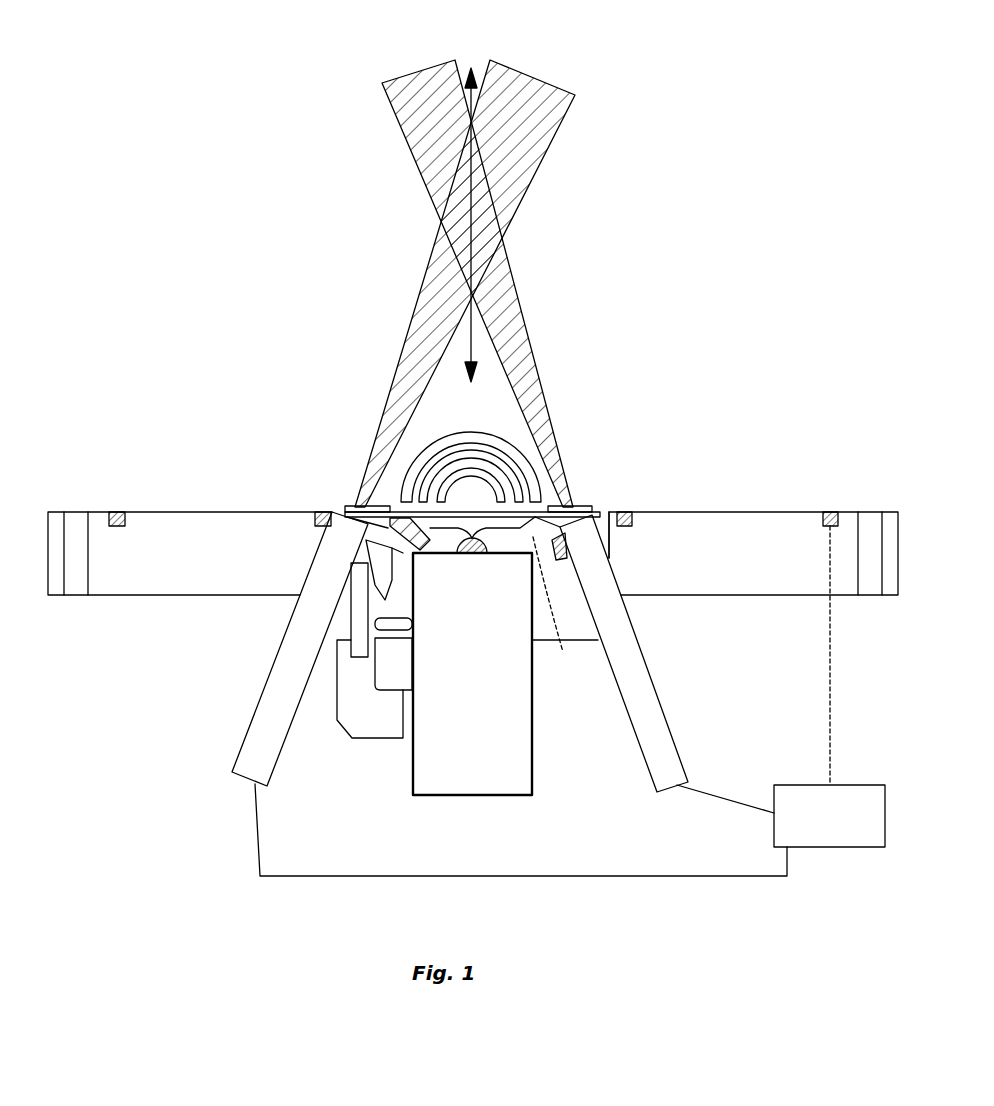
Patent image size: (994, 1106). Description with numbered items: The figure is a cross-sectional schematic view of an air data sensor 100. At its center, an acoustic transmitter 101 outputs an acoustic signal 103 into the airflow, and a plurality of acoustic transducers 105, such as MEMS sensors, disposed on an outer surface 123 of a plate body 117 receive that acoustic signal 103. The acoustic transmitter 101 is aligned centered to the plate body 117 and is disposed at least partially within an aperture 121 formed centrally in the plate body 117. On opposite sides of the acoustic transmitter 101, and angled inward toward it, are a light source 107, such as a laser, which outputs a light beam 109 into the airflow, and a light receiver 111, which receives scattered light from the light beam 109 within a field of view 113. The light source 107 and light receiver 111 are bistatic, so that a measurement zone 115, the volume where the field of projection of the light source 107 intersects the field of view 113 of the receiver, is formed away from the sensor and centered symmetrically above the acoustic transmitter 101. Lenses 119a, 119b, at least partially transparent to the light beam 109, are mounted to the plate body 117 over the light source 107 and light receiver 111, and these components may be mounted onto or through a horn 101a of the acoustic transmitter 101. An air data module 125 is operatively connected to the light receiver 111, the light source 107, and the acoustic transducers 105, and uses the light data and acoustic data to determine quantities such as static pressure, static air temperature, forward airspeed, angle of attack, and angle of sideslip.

The air data sensor 100 is at (140, 76).
The acoustic transmitter 101 is at (535, 740).
The horn 101a is at (567, 611).
The acoustic signal 103 is at (476, 437).
The acoustic transducers 105 is at (115, 511).
The light source 107 is at (281, 735).
The light beam 109 is at (415, 350).
The light receiver 111 is at (640, 740).
The field of view 113 is at (510, 315).
The measurement zone 115 is at (482, 233).
The plate body 117 is at (744, 569).
The lens 119a is at (358, 507).
The lens 119b is at (582, 507).
The aperture 121 is at (605, 528).
The outer surface 123 is at (182, 516).
The air data module 125 is at (850, 826).